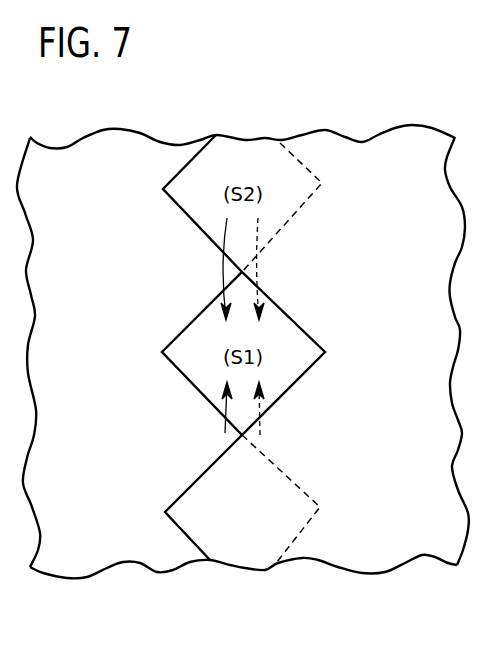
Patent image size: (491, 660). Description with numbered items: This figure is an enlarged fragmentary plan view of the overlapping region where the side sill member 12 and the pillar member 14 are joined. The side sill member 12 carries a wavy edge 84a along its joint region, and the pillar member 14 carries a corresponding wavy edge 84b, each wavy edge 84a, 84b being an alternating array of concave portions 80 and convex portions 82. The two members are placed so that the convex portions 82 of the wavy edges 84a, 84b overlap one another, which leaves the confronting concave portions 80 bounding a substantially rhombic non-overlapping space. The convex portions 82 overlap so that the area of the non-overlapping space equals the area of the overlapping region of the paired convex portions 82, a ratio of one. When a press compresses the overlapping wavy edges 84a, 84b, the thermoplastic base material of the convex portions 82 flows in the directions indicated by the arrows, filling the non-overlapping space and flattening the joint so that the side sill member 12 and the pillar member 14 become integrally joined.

The side sill member 12 is at (153, 150).
The pillar member 14 is at (390, 142).
The concave portions 80 is at (170, 350).
The convex portions 82 is at (165, 189).
The wavy edge 84a is at (183, 547).
The wavy edge 84b is at (240, 156).